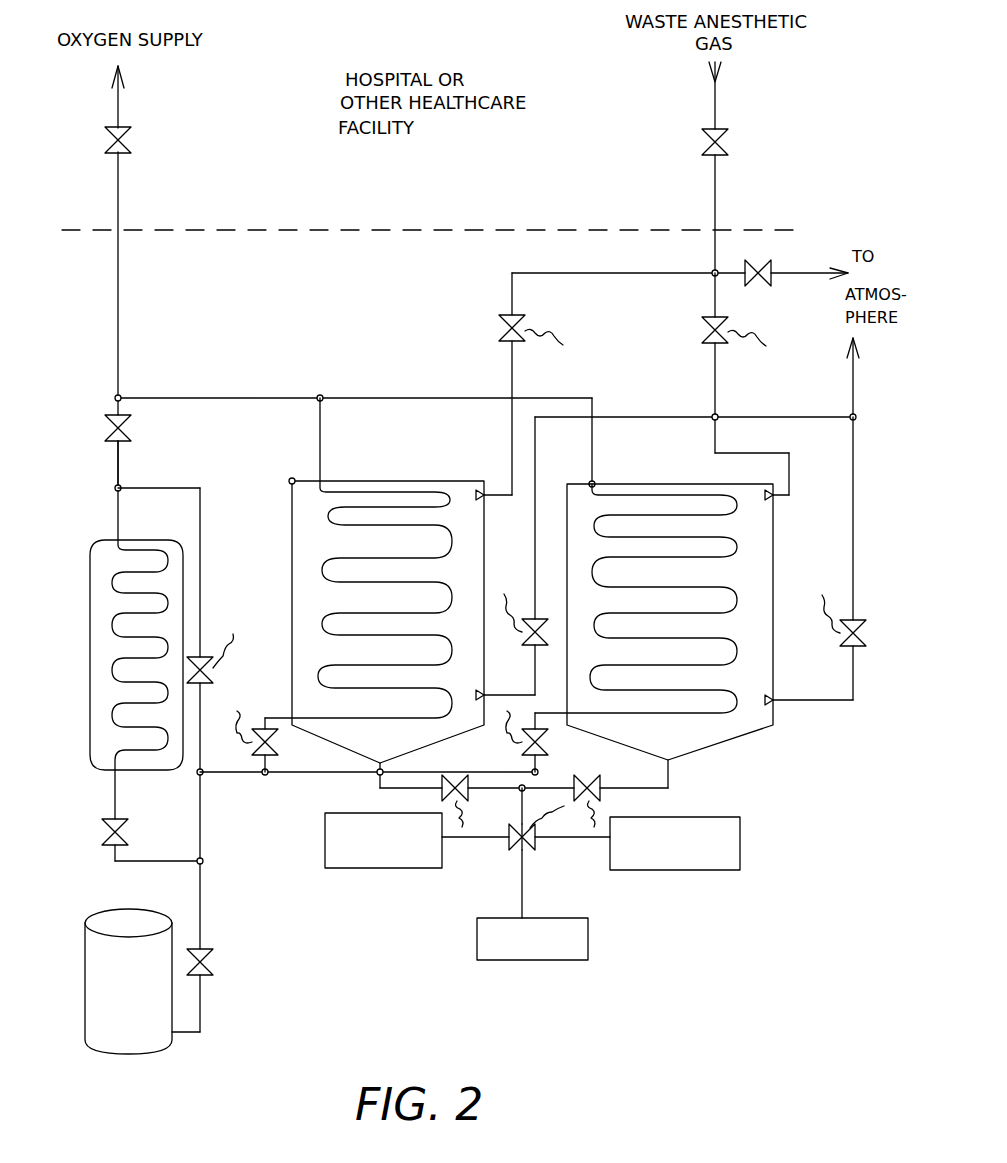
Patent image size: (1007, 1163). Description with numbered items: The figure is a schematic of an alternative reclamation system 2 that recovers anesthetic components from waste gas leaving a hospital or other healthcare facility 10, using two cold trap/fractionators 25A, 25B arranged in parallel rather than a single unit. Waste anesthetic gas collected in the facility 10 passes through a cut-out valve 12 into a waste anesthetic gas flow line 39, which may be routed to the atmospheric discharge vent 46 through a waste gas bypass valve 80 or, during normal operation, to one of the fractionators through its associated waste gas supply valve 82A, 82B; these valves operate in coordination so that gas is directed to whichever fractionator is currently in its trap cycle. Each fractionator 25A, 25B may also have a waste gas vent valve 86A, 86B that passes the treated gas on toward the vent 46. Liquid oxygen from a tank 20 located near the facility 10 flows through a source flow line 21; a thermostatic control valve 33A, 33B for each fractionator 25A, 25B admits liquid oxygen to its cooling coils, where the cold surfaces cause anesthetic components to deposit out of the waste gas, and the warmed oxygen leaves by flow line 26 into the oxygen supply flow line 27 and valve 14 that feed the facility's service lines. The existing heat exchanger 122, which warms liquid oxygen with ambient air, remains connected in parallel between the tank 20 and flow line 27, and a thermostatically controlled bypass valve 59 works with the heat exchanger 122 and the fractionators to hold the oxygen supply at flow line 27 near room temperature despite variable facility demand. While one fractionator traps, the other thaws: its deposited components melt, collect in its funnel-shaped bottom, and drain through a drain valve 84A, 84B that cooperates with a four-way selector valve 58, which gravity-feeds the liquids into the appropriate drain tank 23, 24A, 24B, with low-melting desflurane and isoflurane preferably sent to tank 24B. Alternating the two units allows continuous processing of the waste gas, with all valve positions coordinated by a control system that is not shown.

The reclamation system 2 is at (295, 1033).
The healthcare facility 10 is at (290, 186).
The valve 12 is at (728, 144).
The valve 14 is at (130, 143).
The tank 20 is at (85, 990).
The source flow line 21 is at (200, 832).
The drain tank 23 is at (547, 962).
The collection tank 24A is at (385, 870).
The low melting point collection tank 24B is at (685, 872).
The first cold trap/fractionator 25A is at (292, 560).
The second cold trap/fractionator 25B is at (775, 565).
The flow line 26 is at (215, 398).
The flow line 27 is at (120, 200).
The thermostatic control valve 33A is at (262, 730).
The thermostatic control valve 33B is at (548, 750).
The waste anesthetic gas flow line 39 is at (716, 183).
The atmospheric discharge vent 46 is at (808, 275).
The selector valve 58 is at (527, 852).
The bypass valve 59 is at (220, 665).
The waste gas bypass valve 80 is at (758, 286).
The waste gas supply valve 82A is at (520, 322).
The waste gas supply valve 82B is at (700, 328).
The drain valve 84A is at (446, 792).
The drain valve 84B is at (600, 792).
The waste gas vent valve 86A is at (512, 558).
The waste gas vent valve 86B is at (850, 640).
The heat exchanger 122 is at (90, 676).